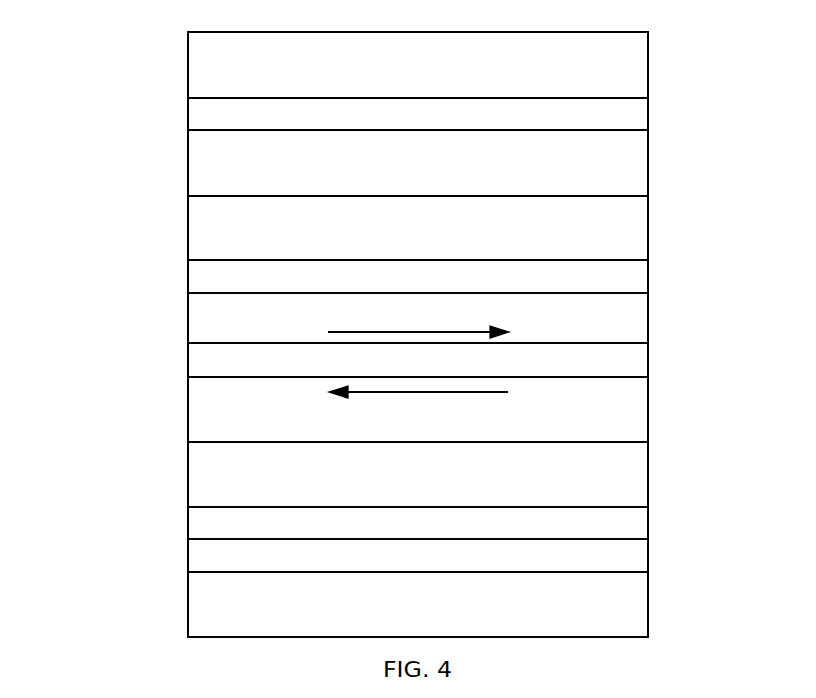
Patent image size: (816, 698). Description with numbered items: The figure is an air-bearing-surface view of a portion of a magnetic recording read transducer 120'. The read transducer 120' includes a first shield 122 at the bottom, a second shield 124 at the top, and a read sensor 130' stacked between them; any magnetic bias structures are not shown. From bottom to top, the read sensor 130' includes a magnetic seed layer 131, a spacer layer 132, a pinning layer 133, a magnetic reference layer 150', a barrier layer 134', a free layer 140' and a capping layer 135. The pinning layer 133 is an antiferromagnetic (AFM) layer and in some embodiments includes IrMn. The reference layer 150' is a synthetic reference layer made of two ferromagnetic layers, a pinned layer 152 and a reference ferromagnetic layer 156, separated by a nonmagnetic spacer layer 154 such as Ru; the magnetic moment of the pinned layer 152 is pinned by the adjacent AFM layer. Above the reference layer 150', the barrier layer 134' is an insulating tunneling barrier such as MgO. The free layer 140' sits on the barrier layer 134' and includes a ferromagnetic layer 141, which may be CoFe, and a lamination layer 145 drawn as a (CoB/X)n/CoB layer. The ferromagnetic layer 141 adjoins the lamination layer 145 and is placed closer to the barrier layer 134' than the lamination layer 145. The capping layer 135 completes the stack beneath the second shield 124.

The read transducer 120' is at (408, 334).
The first shield 122 is at (648, 592).
The second shield 124 is at (648, 80).
The read sensor 130' is at (408, 350).
The magnetic seed layer 131 is at (188, 556).
The spacer layer 132 is at (648, 519).
The pinning layer 133 is at (188, 474).
The barrier layer 134' is at (446, 256).
The capping layer 135 is at (648, 113).
The free layer 140' is at (329, 170).
The ferromagnetic layer 141 is at (188, 228).
The lamination layer 145 is at (188, 143).
The magnetic reference layer 150' is at (369, 388).
The pinned layer 152 is at (648, 421).
The nonmagnetic spacer layer 154 is at (188, 360).
The ferromagnetic layer 156 is at (648, 310).